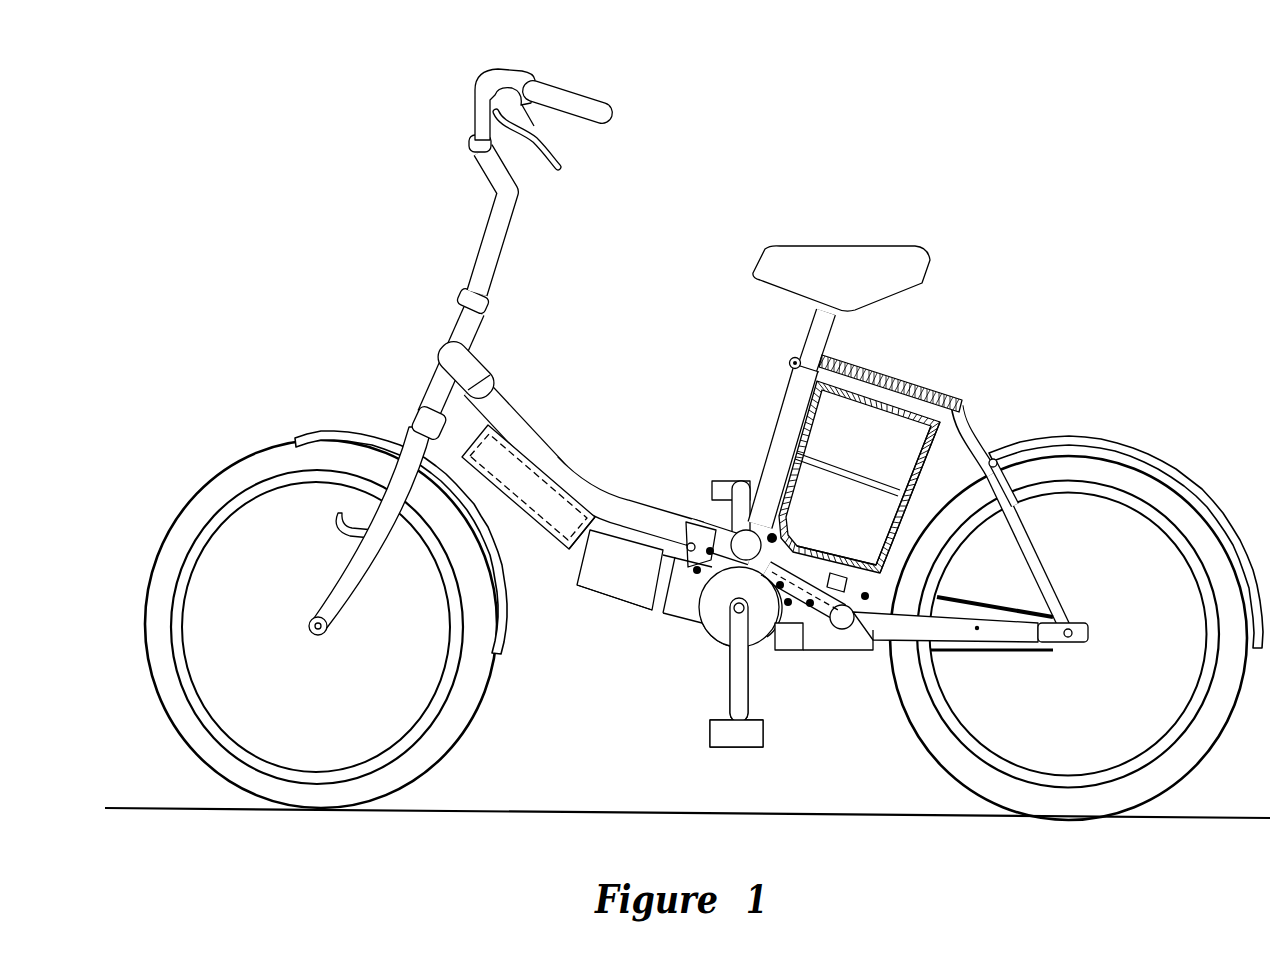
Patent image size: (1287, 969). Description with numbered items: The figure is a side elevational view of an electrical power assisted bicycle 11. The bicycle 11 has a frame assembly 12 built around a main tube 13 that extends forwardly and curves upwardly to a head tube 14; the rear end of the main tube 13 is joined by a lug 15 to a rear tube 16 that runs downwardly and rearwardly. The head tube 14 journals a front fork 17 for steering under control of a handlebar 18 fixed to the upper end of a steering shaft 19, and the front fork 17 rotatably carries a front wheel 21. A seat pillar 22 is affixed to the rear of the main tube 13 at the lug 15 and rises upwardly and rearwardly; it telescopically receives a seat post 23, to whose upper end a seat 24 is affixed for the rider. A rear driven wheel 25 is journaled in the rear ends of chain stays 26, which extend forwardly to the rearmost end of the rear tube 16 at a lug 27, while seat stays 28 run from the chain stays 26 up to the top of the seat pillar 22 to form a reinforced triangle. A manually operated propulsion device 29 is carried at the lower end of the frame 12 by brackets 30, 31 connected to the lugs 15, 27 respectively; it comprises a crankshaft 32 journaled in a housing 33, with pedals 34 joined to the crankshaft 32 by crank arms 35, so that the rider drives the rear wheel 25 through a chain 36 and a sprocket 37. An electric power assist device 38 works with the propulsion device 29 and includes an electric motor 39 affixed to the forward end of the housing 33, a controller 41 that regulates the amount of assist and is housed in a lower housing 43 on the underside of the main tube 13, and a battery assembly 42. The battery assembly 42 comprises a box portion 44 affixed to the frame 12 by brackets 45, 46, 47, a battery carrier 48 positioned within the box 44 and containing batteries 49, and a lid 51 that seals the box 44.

The electrical power assisted bicycle 11 is at (975, 305).
The frame assembly 12 is at (518, 400).
The main tube 13 is at (622, 512).
The head tube 14 is at (460, 323).
The lug 15 is at (703, 532).
The rear tube 16 is at (820, 657).
The front fork 17 is at (360, 587).
The handlebar 18 is at (492, 73).
The steering shaft 19 is at (497, 237).
The front wheel 21 is at (285, 447).
The seat pillar 22 is at (790, 470).
The seat post 23 is at (840, 335).
The seat 24 is at (838, 262).
The rear driven wheel 25 is at (1100, 470).
The chain stays 26 is at (963, 627).
The lug 27 is at (841, 630).
The seat stays 28 is at (1027, 557).
The manually operated propulsion device 29 is at (703, 638).
The bracket 30 is at (665, 600).
The bracket 31 is at (793, 627).
The crankshaft 32 is at (722, 618).
The housing 33 is at (703, 625).
The pedals 34 is at (740, 478).
The crank arms 35 is at (717, 530).
The chain 36 is at (870, 660).
The sprocket 37 is at (1067, 650).
The electric power assist device 38 is at (603, 605).
The electric motor 39 is at (623, 600).
The controller 41 is at (530, 512).
The battery assembly 42 is at (845, 471).
The lower housing 43 is at (567, 560).
The box portion 44 is at (905, 520).
The bracket 45 is at (803, 547).
The bracket 46 is at (937, 653).
The bracket 47 is at (973, 432).
The battery carrier 48 is at (885, 525).
The batteries 49 is at (781, 445).
The lid 51 is at (930, 392).